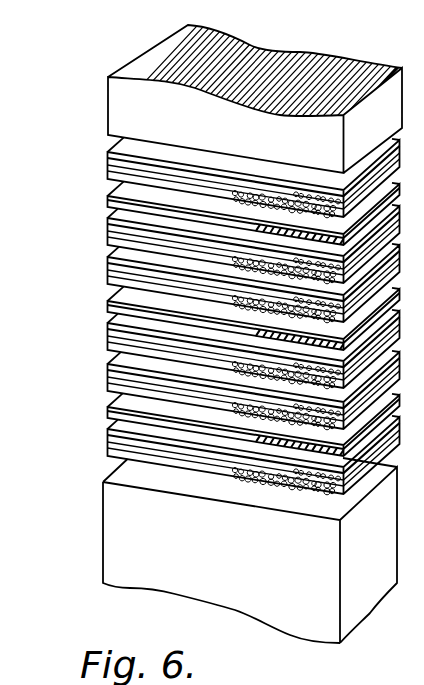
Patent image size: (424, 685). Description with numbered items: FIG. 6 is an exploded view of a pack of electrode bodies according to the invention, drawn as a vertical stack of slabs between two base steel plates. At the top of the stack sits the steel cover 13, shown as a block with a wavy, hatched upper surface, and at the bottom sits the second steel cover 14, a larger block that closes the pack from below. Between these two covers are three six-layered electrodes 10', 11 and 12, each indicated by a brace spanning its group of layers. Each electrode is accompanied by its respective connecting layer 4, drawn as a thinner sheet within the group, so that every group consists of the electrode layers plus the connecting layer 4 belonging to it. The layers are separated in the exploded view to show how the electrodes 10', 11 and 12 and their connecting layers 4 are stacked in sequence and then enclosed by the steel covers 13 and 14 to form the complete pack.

The steel cover 13 is at (167, 55).
The steel cover 14 is at (123, 543).
The six-layered electrode 10' is at (213, 211).
The six-layered electrode 11 is at (93, 260).
The six-layered electrode 12 is at (93, 365).
The connecting layer 4 is at (108, 197).